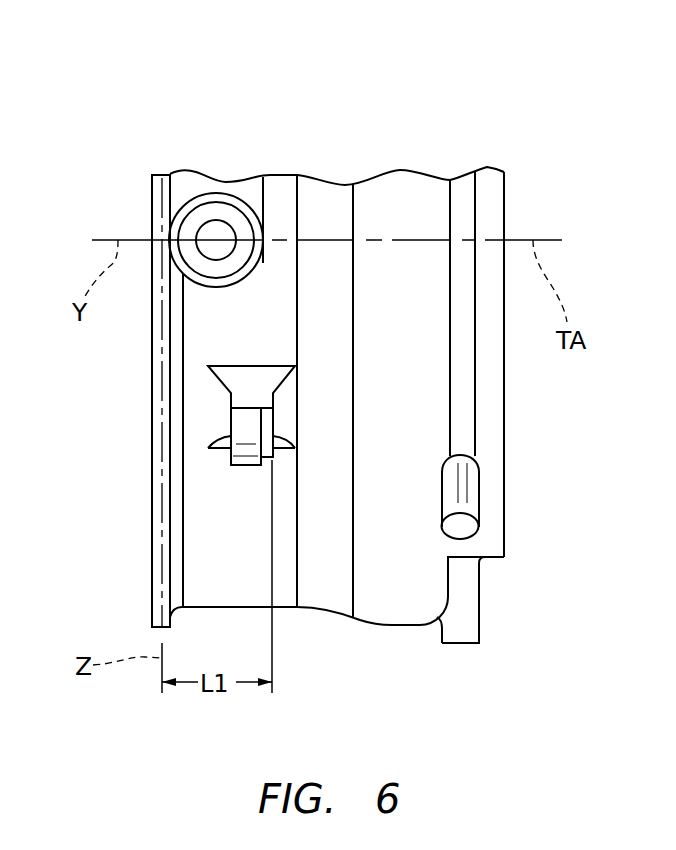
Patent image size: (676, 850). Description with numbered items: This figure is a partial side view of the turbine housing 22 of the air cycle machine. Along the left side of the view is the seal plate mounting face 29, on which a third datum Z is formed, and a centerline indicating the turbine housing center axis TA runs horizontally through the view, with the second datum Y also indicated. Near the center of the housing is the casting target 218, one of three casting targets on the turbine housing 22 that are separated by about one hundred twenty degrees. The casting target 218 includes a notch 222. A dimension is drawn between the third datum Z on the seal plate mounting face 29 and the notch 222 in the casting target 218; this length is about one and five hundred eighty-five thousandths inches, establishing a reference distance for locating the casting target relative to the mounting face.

The turbine housing 22 is at (176, 81).
The seal plate mounting face 29 is at (157, 570).
The casting target 218 is at (232, 428).
The notch 222 is at (273, 427).